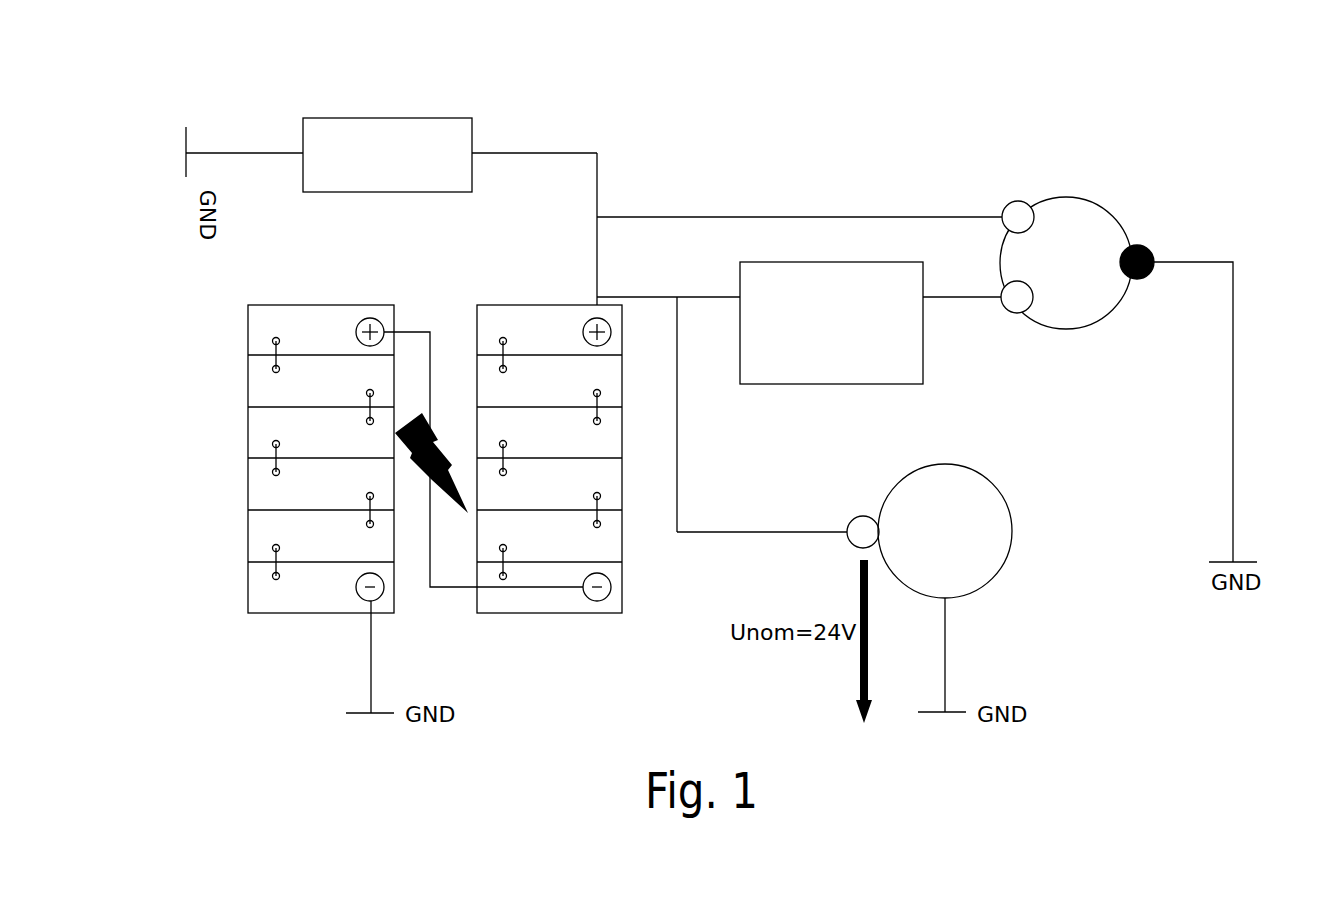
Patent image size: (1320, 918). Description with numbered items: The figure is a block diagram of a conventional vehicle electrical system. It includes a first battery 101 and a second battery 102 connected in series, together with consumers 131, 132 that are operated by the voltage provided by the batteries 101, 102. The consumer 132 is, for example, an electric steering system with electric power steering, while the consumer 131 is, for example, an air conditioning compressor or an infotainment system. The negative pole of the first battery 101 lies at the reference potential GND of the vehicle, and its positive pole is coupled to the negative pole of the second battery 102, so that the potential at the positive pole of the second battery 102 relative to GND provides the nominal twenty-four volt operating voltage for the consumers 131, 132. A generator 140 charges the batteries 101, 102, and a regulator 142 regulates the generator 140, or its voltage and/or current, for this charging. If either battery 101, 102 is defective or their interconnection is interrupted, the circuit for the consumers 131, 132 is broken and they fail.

The first battery 101 is at (290, 430).
The second battery 102 is at (612, 605).
The consumer 131 is at (423, 135).
The consumer 132 is at (987, 520).
The generator 140 is at (1080, 222).
The regulator 142 is at (885, 352).